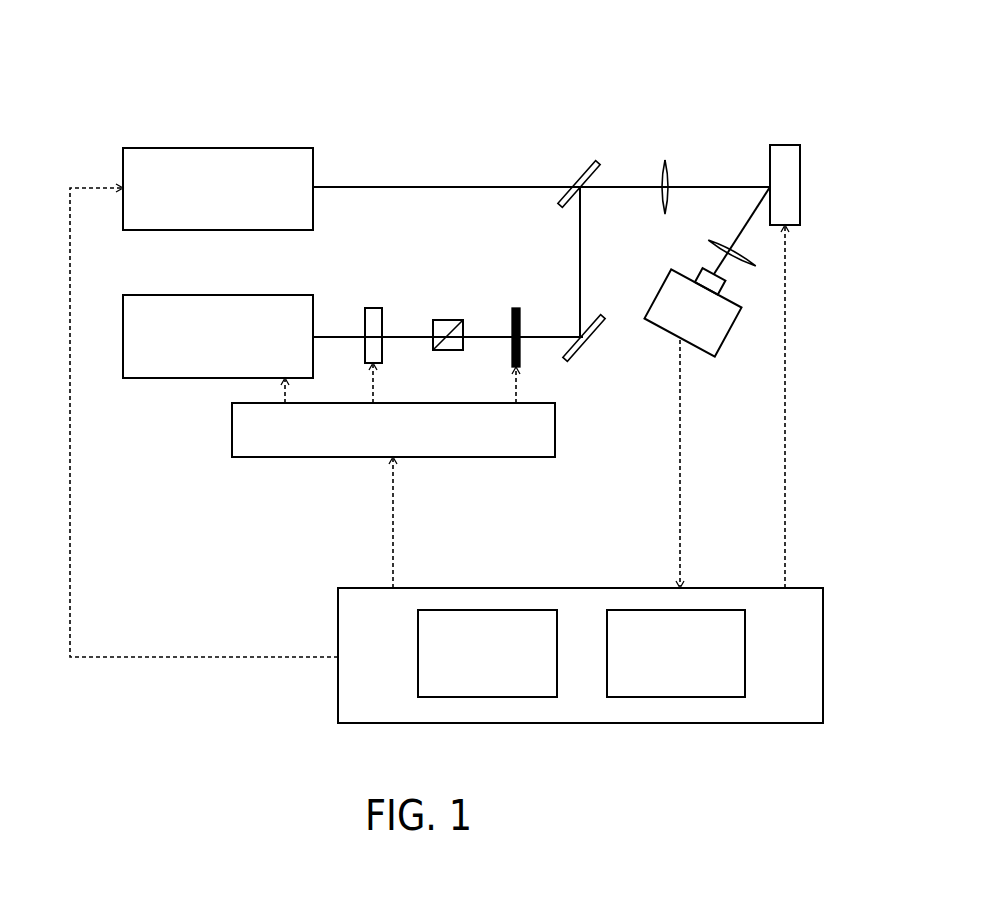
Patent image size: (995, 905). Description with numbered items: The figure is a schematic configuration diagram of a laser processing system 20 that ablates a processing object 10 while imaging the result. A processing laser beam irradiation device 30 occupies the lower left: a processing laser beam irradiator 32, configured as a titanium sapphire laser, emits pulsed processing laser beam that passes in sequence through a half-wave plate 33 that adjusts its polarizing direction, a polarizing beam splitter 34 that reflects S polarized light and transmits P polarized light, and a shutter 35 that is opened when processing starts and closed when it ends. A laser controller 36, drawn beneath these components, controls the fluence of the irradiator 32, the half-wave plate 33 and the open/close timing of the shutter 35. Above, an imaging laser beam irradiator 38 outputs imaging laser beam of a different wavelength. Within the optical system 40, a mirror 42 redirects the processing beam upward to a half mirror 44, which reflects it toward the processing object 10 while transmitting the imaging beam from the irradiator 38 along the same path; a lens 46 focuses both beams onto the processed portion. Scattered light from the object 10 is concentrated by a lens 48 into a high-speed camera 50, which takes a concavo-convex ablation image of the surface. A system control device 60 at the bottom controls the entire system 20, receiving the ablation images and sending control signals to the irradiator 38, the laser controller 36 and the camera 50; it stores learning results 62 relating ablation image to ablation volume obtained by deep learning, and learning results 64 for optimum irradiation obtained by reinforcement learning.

The processing object 10 is at (785, 143).
The laser processing system 20 is at (503, 63).
The processing laser beam irradiation device 30 is at (213, 467).
The processing laser beam irradiator 32 is at (226, 293).
The half-wave plate 33 is at (374, 306).
The polarizing beam splitter 34 is at (443, 319).
The shutter 35 is at (518, 306).
The laser controller 36 is at (468, 458).
The imaging laser beam irradiator 38 is at (218, 146).
The optical system 40 is at (607, 120).
The mirror 42 is at (590, 343).
The half mirror 44 is at (585, 163).
The lens 46 is at (665, 159).
The lens 48 is at (714, 244).
The high-speed camera 50 is at (727, 332).
The system control device 60 is at (580, 587).
The learning results 62 is at (673, 698).
The learning results 64 is at (487, 698).